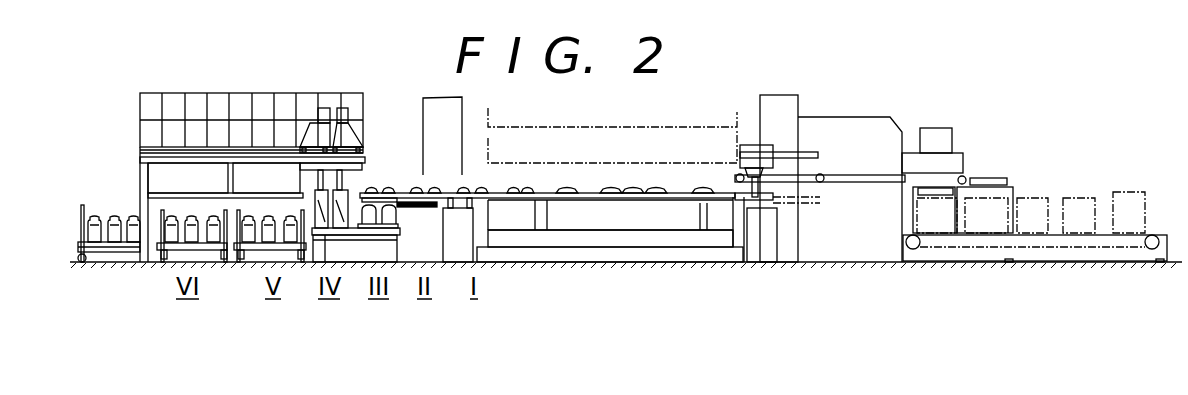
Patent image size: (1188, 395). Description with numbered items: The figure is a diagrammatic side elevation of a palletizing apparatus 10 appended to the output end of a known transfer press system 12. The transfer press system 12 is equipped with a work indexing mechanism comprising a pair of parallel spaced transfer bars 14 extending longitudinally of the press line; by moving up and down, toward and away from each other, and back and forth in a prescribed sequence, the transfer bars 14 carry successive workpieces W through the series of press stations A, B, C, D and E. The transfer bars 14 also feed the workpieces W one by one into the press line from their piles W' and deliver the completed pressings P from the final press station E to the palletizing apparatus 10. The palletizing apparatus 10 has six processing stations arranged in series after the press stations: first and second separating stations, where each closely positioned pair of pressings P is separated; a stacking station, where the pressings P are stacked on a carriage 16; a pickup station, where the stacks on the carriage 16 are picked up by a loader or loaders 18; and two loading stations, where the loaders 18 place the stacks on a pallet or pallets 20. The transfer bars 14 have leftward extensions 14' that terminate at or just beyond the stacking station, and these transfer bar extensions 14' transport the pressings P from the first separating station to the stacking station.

The palletizing apparatus 10 is at (285, 88).
The transfer press system 12 is at (736, 97).
The transfer bars 14 is at (551, 179).
The transfer bar extensions 14' is at (460, 230).
The carriage 16 is at (408, 236).
The loader 18 is at (323, 130).
The pallet 20 is at (248, 258).
The pressings P is at (272, 217).
The workpieces W is at (636, 209).
The piles of workpieces W' is at (1031, 248).
The press station A is at (705, 182).
The press station B is at (660, 182).
The press station C is at (610, 182).
The press station D is at (565, 182).
The final press station E is at (513, 182).